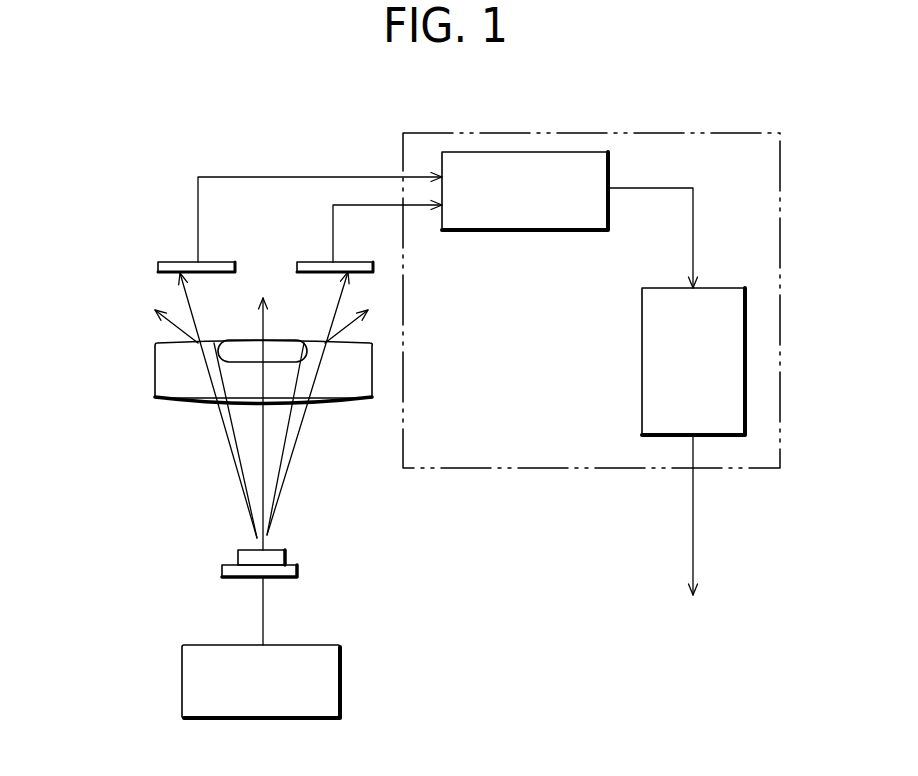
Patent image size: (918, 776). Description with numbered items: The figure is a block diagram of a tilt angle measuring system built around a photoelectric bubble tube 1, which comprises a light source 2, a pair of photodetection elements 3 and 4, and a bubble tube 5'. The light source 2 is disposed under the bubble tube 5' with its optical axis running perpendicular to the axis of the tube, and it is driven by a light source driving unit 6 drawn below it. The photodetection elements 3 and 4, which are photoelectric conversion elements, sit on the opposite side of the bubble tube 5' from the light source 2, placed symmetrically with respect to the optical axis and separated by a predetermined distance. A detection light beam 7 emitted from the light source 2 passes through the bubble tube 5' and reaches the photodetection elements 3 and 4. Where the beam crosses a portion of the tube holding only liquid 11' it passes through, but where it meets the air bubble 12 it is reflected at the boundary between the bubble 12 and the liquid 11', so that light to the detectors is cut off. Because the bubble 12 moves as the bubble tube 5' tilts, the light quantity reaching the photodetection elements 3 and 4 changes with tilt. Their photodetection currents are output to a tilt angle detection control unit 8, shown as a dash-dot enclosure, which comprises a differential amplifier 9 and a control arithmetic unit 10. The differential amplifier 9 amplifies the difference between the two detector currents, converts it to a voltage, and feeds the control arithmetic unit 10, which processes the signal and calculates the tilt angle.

The photoelectric bubble tube 1 is at (208, 379).
The light source 2 is at (238, 551).
The photodetection element 3 is at (177, 262).
The photodetection element 4 is at (312, 262).
The bubble tube 5' is at (244, 437).
The light source driving unit 6 is at (340, 672).
The detection light beam 7 is at (290, 465).
The tilt angle detection control unit 8 is at (780, 257).
The differential amplifier 9 is at (458, 152).
The control arithmetic unit 10 is at (642, 330).
The liquid 11' is at (211, 410).
The air bubble 12 is at (278, 345).